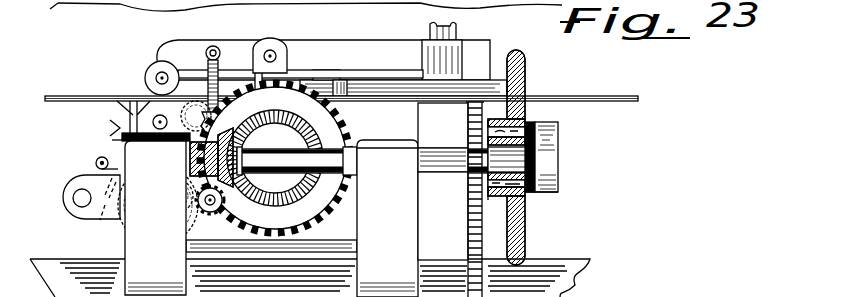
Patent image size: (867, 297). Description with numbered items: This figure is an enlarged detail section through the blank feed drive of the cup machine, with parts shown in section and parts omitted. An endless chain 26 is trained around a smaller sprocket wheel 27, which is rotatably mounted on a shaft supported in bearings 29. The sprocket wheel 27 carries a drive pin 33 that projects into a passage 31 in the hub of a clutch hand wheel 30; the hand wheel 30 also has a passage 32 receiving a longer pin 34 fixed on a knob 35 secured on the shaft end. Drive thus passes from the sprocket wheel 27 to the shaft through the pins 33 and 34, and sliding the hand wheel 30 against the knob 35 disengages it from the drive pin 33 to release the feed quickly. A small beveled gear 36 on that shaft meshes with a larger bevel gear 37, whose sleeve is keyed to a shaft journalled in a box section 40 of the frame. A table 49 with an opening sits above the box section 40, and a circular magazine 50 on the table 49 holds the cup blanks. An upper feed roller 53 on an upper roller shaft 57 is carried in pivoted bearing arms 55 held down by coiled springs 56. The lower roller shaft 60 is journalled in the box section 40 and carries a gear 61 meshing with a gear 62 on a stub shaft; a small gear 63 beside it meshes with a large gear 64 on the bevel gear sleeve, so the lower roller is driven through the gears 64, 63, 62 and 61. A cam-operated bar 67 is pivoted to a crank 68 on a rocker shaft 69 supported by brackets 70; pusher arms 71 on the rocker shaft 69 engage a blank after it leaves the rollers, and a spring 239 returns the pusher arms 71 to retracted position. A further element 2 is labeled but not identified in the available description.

The frame 2 is at (98, 6).
The upper roller shaft 57 is at (165, 70).
The pivoted bearing arms 55 is at (191, 47).
The coiled springs 56 is at (215, 60).
The circular magazine 50 is at (395, 33).
The clutch hand wheel 30 is at (527, 66).
The table 49 is at (618, 97).
The upper feed roller 53 is at (148, 70).
The pusher arms 71 is at (125, 101).
The small beveled gear 36 is at (275, 158).
The smaller sprocket wheel 27 is at (470, 108).
The passage 31 is at (528, 122).
The knob 35 is at (622, 132).
The bar 67 is at (110, 128).
The lower roller shaft 60 is at (150, 120).
The gear 61 is at (180, 113).
The spring 239 is at (118, 142).
The crank 68 is at (96, 163).
The endless chain 26 is at (486, 239).
The drive pin 33 is at (500, 128).
The rocker shaft 69 is at (80, 200).
The brackets 70 is at (104, 214).
The larger bevel gear 37 is at (262, 206).
The large gear 64 is at (325, 195).
The passage 32 is at (500, 180).
The longer pin 34 is at (530, 194).
The bearings 29 is at (271, 218).
The gear 62 is at (197, 212).
The small gear 63 is at (205, 192).
The box section 40 is at (342, 247).